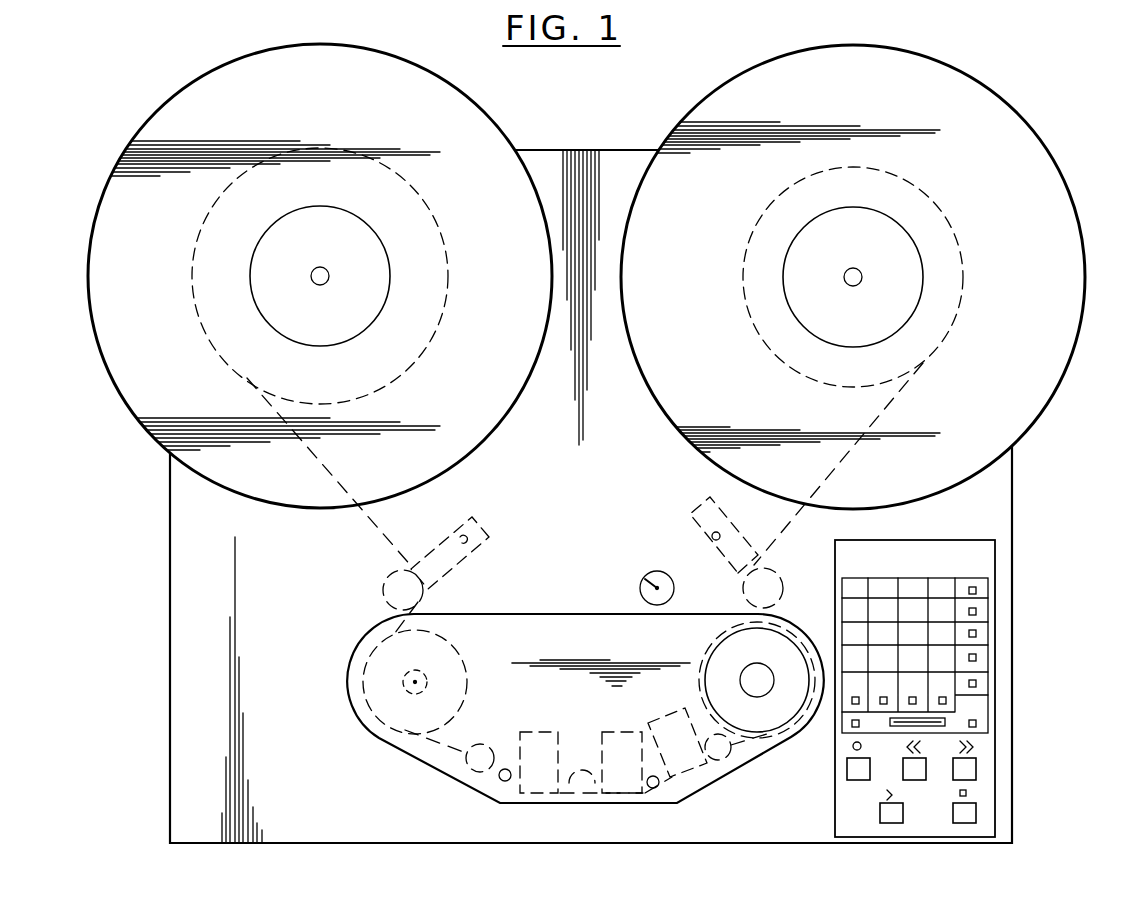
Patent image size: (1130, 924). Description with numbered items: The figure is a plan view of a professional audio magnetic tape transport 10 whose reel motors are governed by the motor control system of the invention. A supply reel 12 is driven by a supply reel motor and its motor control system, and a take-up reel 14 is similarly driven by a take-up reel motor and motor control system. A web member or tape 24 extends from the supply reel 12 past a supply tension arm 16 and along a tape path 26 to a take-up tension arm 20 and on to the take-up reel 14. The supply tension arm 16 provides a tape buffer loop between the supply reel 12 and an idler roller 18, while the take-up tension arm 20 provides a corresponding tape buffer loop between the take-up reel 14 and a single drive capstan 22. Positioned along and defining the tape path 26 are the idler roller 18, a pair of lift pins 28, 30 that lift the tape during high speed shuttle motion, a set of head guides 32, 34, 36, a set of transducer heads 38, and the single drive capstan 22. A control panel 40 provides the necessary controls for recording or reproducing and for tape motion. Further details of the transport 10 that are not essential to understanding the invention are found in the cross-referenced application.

The professional audio magnetic tape transport 10 is at (296, 628).
The supply reel 12 is at (492, 128).
The take-up reel 14 is at (697, 104).
The supply tension arm 16 is at (478, 530).
The idler roller 18 is at (438, 643).
The take-up tension arm 20 is at (702, 508).
The single drive capstan 22 is at (787, 655).
The tape 24 is at (375, 531).
The tape path 26 is at (417, 740).
The lift pin 28 is at (504, 782).
The lift pin 30 is at (660, 790).
The head guide 32 is at (466, 782).
The head guide 34 is at (586, 798).
The head guide 36 is at (722, 760).
The transducer heads 38 is at (593, 640).
The control panel 40 is at (984, 560).